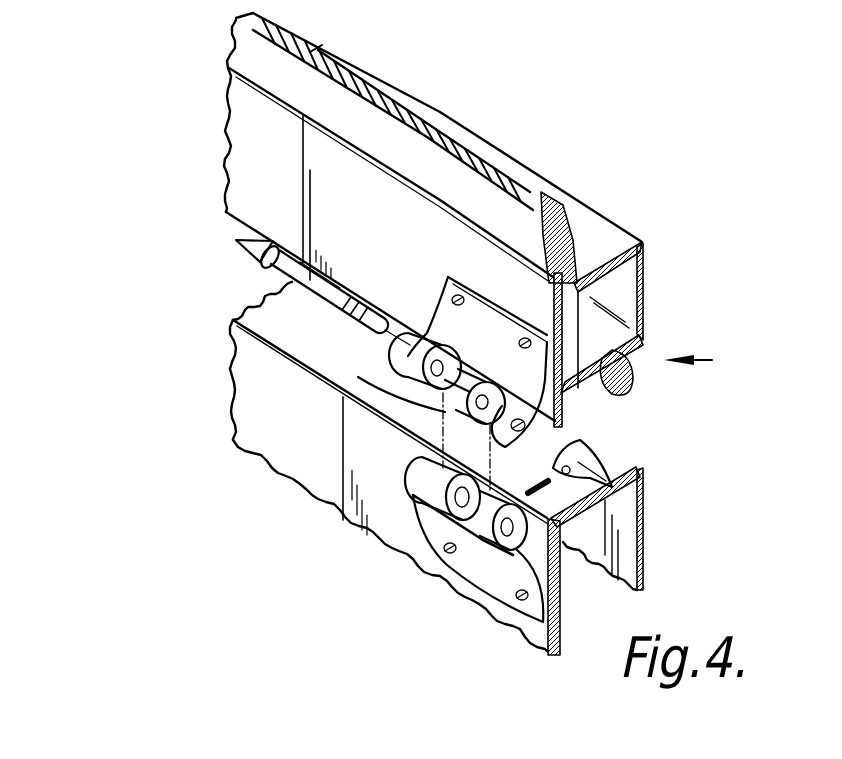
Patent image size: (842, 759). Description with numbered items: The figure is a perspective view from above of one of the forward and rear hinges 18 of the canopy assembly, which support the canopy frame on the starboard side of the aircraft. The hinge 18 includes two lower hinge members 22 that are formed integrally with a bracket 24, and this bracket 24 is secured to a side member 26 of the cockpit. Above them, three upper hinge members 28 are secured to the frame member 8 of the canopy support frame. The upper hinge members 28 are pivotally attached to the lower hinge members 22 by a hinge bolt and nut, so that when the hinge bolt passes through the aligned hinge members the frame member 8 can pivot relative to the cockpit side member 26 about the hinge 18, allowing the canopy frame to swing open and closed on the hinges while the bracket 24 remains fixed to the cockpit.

The frame member 8 is at (645, 292).
The hinge 18 is at (707, 360).
The lower hinge member 22 is at (430, 478).
The bracket 24 is at (510, 568).
The side member 26 is at (645, 517).
The upper hinge member 28 is at (405, 378).